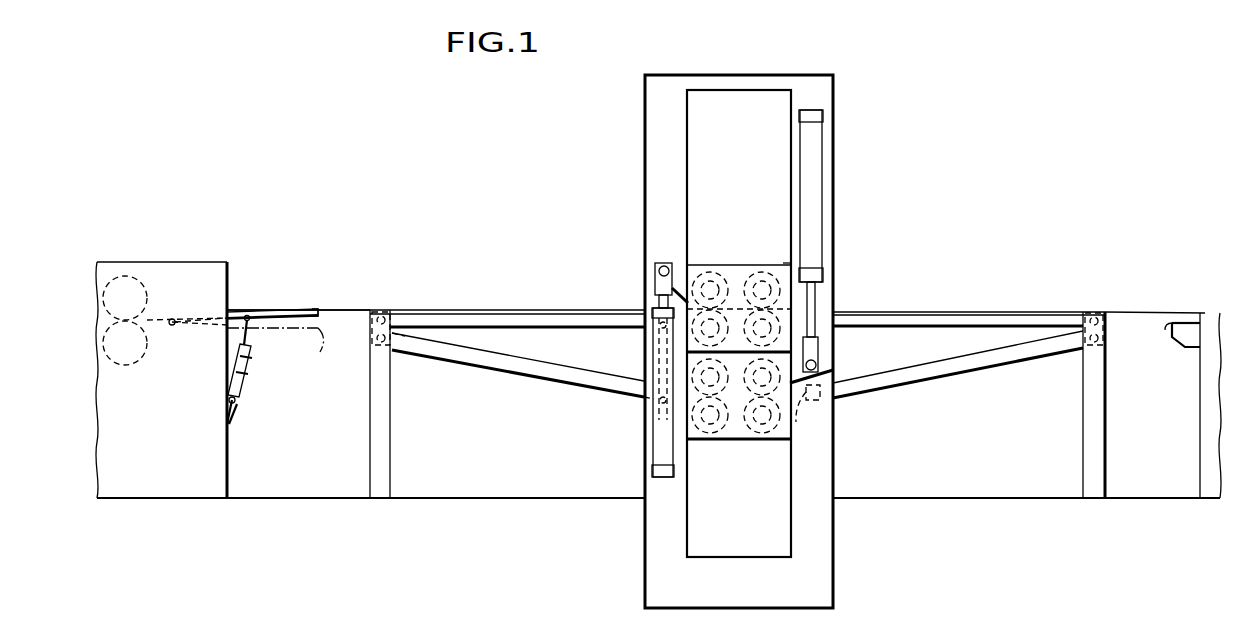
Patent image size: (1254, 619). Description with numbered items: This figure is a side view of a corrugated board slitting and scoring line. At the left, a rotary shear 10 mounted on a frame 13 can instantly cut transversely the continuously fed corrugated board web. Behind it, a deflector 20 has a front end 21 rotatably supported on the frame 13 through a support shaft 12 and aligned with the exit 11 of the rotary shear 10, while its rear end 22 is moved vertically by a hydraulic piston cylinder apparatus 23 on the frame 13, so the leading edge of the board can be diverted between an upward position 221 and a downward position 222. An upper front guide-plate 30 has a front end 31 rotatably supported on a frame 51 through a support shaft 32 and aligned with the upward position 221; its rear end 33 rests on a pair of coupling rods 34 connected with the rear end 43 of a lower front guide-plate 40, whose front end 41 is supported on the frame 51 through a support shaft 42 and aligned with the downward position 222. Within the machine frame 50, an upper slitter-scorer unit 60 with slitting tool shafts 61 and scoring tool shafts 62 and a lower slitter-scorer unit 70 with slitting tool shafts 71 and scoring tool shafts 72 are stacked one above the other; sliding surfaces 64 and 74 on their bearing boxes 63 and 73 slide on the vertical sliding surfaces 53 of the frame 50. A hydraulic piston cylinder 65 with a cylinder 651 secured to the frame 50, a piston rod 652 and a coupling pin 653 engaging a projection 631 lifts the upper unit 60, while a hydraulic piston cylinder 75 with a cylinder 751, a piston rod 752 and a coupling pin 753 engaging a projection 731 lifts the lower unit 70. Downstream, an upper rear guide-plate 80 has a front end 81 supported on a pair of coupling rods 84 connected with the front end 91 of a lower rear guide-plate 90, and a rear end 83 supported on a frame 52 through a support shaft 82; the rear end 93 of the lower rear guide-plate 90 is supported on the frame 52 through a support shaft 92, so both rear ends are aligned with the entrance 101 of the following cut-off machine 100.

The rotary shear 10 is at (122, 268).
The exit of the rotary shear 11 is at (170, 320).
The support shaft 12 is at (172, 326).
The frame 13 is at (226, 506).
The deflector 20 is at (234, 338).
The front end of the deflector 21 is at (174, 318).
The rear end of the deflector 22 is at (265, 310).
The upward position 221 is at (318, 308).
The downward position 222 is at (322, 348).
The hydraulic piston cylinder apparatus 23 is at (245, 372).
The upper front guide-plate 30 is at (474, 306).
The front end of the upper front guide-plate 31 is at (366, 312).
The support shaft 32 is at (398, 320).
The rear end of the upper front guide-plate 33 is at (648, 328).
The coupling rods 34 is at (660, 342).
The lower front guide-plate 40 is at (504, 381).
The front end of the lower front guide-plate 41 is at (370, 330).
The support shaft 42 is at (396, 348).
The rear end of the lower front guide-plate 43 is at (652, 405).
The machine frame 50 is at (638, 184).
The frame 51 is at (392, 434).
The frame 52 is at (1090, 418).
The vertical sliding surfaces 53 is at (688, 162).
The upper slitter-scorer unit 60 is at (741, 263).
The slitting tool shafts 61 is at (762, 272).
The scoring tool shafts 62 is at (712, 270).
The bearing boxes 63 is at (784, 263).
The sliding surfaces 64 is at (655, 300).
The hydraulic piston cylinder 65 is at (671, 487).
The projection 631 is at (660, 262).
The cylinder 651 is at (652, 463).
The piston rod 652 is at (656, 302).
The coupling pin 653 is at (655, 286).
The lower slitter-scorer unit 70 is at (739, 439).
The slitting tool shafts 71 is at (755, 422).
The scoring tool shafts 72 is at (710, 422).
The bearing boxes 73 is at (782, 440).
The sliding surfaces 74 is at (816, 300).
The hydraulic piston cylinder 75 is at (832, 113).
The cylinder 751 is at (812, 165).
The piston rod 752 is at (815, 285).
The coupling pin 753 is at (825, 382).
The projection 731 is at (825, 362).
The upper rear guide-plate 80 is at (1005, 307).
The front end of the upper rear guide-plate 81 is at (800, 300).
The support shaft 82 is at (1085, 312).
The rear end of the upper rear guide-plate 83 is at (1106, 312).
The coupling rods 84 is at (838, 332).
The lower rear guide-plate 90 is at (979, 378).
The front end of the lower rear guide-plate 91 is at (822, 450).
The support shaft 92 is at (1085, 343).
The rear end of the lower rear guide-plate 93 is at (1108, 328).
The cut-off machine 100 is at (1201, 307).
The entrance 101 is at (1190, 342).